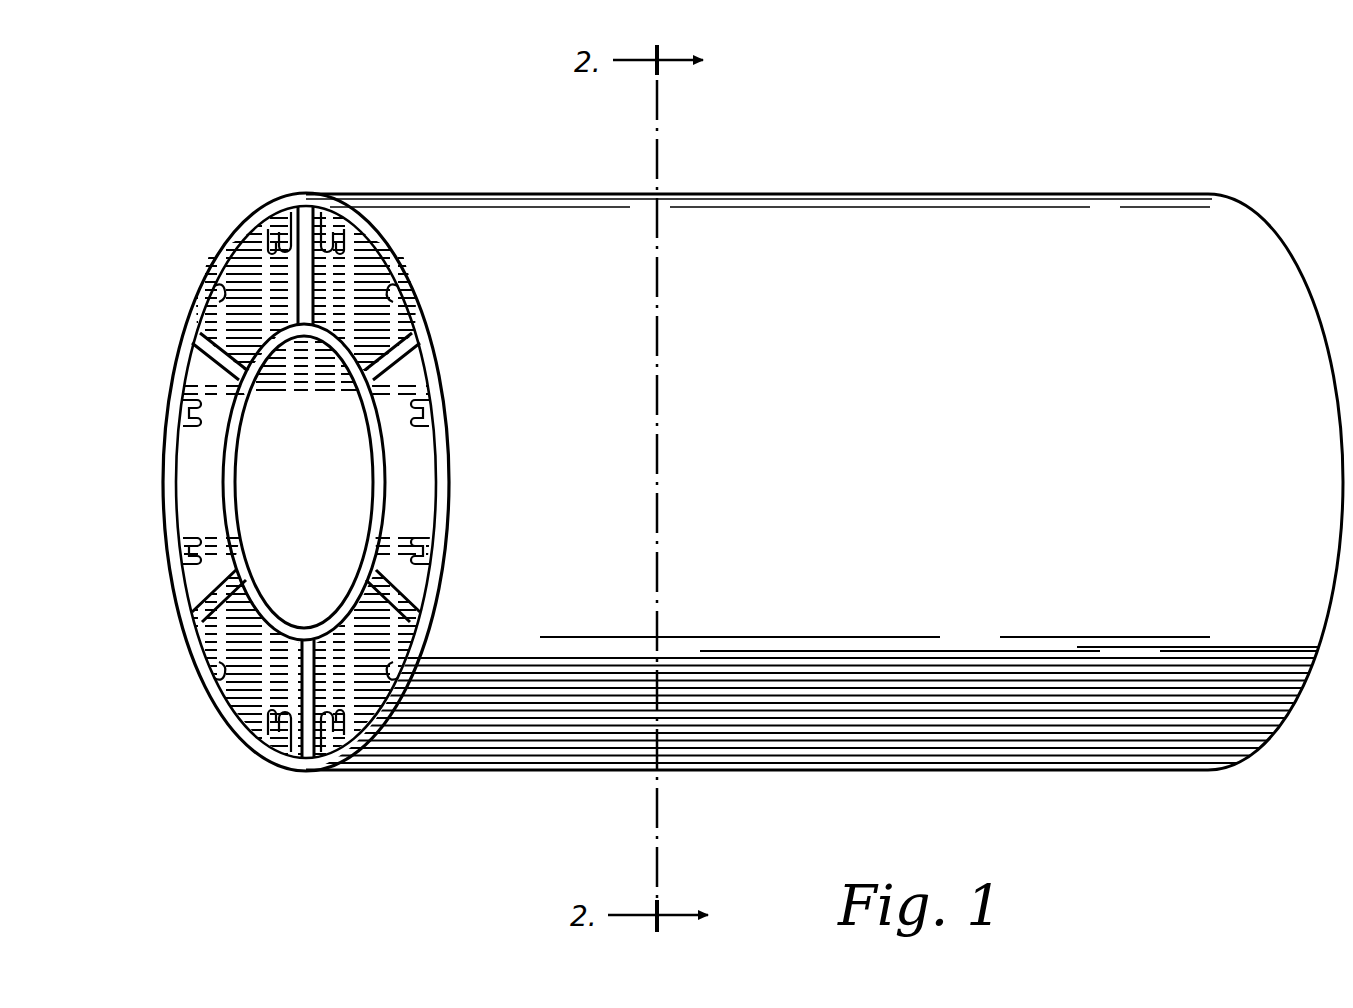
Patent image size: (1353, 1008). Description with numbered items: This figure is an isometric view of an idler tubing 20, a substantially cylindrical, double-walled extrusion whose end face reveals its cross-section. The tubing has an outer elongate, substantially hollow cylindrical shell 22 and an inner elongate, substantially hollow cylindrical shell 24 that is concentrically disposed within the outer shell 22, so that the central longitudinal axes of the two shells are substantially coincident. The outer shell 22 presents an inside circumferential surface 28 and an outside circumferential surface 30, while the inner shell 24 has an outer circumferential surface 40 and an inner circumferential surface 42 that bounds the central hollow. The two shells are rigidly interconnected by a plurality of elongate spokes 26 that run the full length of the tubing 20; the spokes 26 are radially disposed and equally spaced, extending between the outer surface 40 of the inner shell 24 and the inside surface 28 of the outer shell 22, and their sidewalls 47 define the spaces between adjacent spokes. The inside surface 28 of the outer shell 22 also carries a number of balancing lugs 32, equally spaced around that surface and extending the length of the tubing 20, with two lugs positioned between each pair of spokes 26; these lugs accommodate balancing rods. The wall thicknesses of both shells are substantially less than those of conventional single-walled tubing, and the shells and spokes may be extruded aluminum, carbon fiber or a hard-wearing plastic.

The idler tubing 20 is at (1116, 184).
The outer shell 22 is at (443, 518).
The inner shell 24 is at (364, 356).
The spokes 26 is at (320, 678).
The inside circumferential surface 28 is at (443, 487).
The outside circumferential surface 30 is at (455, 445).
The balancing lugs 32 is at (178, 406).
The outer circumferential surface 40 is at (374, 368).
The inner circumferential surface 42 is at (365, 387).
The sidewalls 47 is at (366, 303).